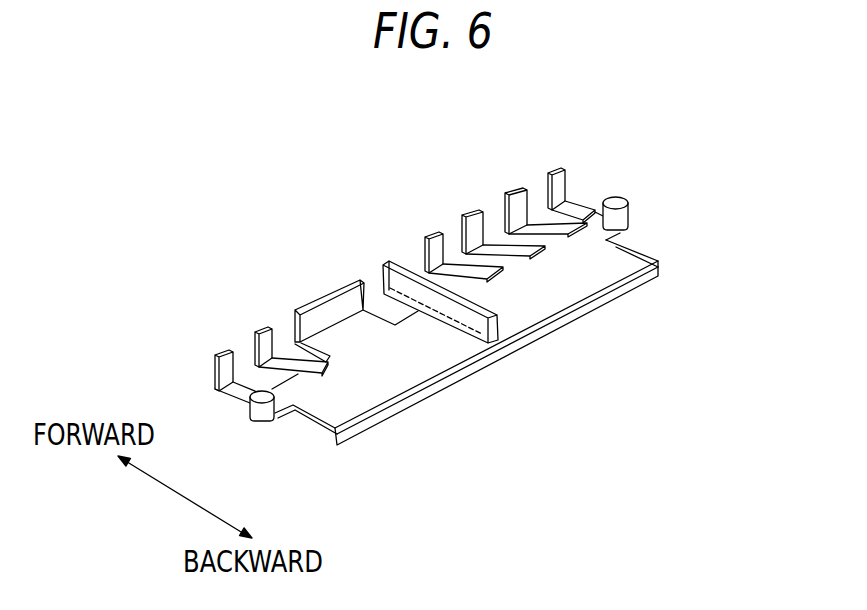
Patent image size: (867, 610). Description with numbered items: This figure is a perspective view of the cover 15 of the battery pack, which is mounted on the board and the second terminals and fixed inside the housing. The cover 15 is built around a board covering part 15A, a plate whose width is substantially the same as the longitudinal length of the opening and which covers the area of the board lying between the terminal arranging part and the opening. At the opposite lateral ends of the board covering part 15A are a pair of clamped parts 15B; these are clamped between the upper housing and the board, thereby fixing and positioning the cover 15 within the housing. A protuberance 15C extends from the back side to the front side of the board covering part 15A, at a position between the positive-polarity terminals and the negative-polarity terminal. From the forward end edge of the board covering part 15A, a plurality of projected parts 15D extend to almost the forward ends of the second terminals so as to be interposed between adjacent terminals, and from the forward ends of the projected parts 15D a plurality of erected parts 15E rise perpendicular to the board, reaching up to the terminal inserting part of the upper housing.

The cover 15 is at (648, 192).
The board covering part 15A is at (537, 292).
The clamped parts 15B is at (262, 412).
The protuberance 15C is at (458, 312).
The projected parts 15D is at (577, 205).
The erected parts 15E is at (548, 184).